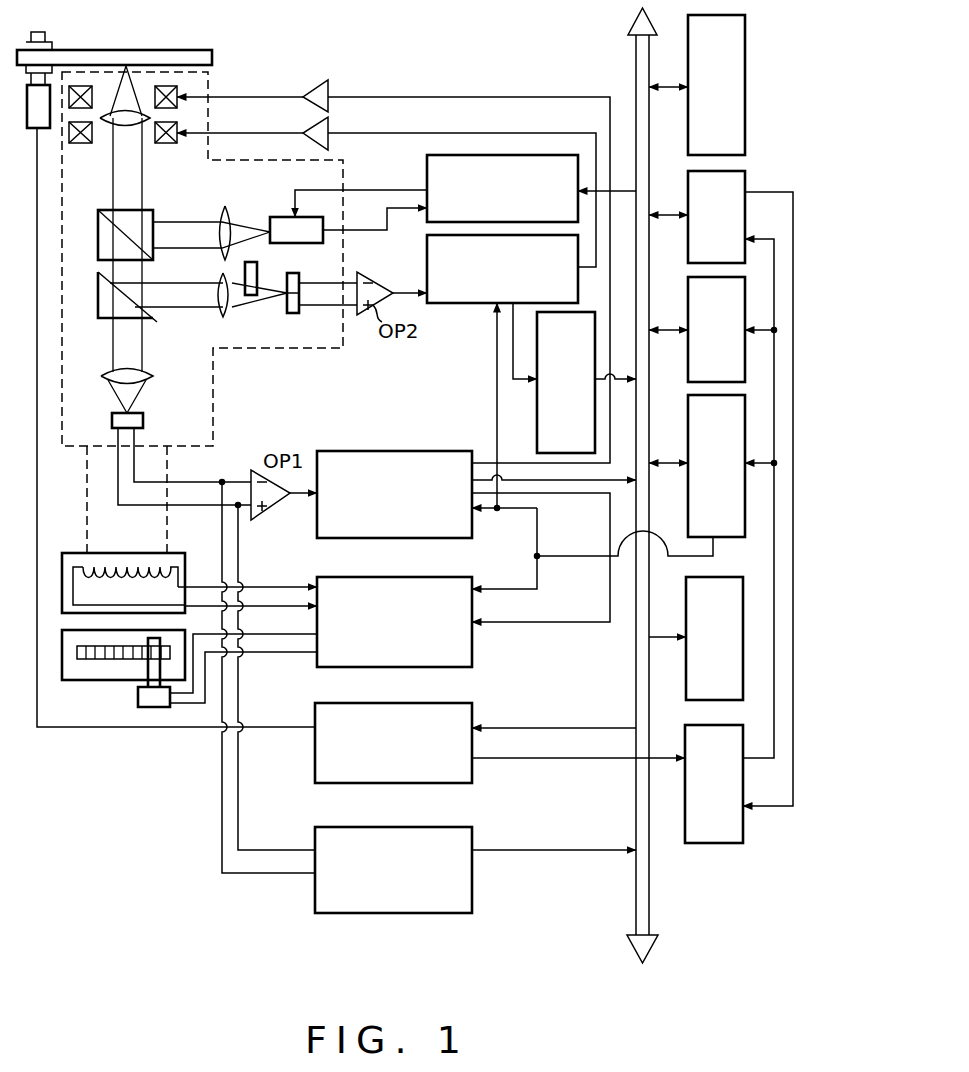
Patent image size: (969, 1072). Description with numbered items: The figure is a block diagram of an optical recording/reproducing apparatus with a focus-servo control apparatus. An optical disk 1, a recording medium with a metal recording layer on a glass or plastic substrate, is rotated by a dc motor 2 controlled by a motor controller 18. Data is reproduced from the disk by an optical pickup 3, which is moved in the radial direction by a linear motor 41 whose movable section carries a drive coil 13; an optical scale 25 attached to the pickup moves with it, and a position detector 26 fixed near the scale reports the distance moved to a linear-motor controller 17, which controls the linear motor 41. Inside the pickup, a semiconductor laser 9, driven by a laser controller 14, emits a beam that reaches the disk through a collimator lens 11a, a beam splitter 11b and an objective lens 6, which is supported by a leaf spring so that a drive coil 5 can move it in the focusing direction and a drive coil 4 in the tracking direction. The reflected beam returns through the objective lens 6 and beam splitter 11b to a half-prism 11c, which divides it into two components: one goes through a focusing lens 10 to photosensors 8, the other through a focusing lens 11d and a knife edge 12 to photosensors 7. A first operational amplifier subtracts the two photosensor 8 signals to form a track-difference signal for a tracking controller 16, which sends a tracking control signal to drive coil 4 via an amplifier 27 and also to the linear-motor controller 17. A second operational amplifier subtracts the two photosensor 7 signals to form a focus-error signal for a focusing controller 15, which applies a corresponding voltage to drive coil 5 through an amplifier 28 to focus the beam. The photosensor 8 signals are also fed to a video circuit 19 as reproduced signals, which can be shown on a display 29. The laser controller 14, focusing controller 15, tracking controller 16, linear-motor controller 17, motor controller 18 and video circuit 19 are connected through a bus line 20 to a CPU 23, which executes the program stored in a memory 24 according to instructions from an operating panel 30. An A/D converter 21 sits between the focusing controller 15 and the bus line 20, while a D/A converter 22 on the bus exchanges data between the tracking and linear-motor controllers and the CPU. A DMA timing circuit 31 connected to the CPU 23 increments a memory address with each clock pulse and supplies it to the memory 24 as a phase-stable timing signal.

The optical disk 1 is at (116, 50).
The dc motor 2 is at (40, 128).
The optical pickup 3 is at (213, 133).
The drive coil 4 is at (177, 102).
The drive coil 5 is at (177, 140).
The objective lens 6 is at (130, 126).
The photosensors 7 is at (300, 313).
The photosensors 8 is at (144, 418).
The semiconductor laser 9 is at (283, 217).
The focusing lens 10 is at (108, 372).
The collimator lens 11a is at (220, 212).
The beam splitter 11b is at (98, 222).
The half-prism 11c is at (157, 322).
The focusing lens 11d is at (225, 318).
The knife edge 12 is at (257, 272).
The drive coil 13 is at (142, 566).
The laser controller 14 is at (427, 176).
The focusing controller 15 is at (427, 258).
The tracking controller 16 is at (472, 532).
The linear-motor controller 17 is at (472, 657).
The motor controller 18 is at (472, 780).
The video circuit 19 is at (472, 903).
The bus line 20 is at (650, 898).
The A/D converter 21 is at (537, 440).
The D/A converter 22 is at (688, 508).
The CPU 23 is at (688, 248).
The memory 24 is at (688, 362).
The optical scale 25 is at (75, 680).
The position detector 26 is at (140, 700).
The amplifier 27 is at (329, 83).
The amplifier 28 is at (329, 132).
The display 29 is at (686, 670).
The operating panel 30 is at (688, 130).
The DMA timing circuit 31 is at (685, 820).
The linear motor 41 is at (76, 555).